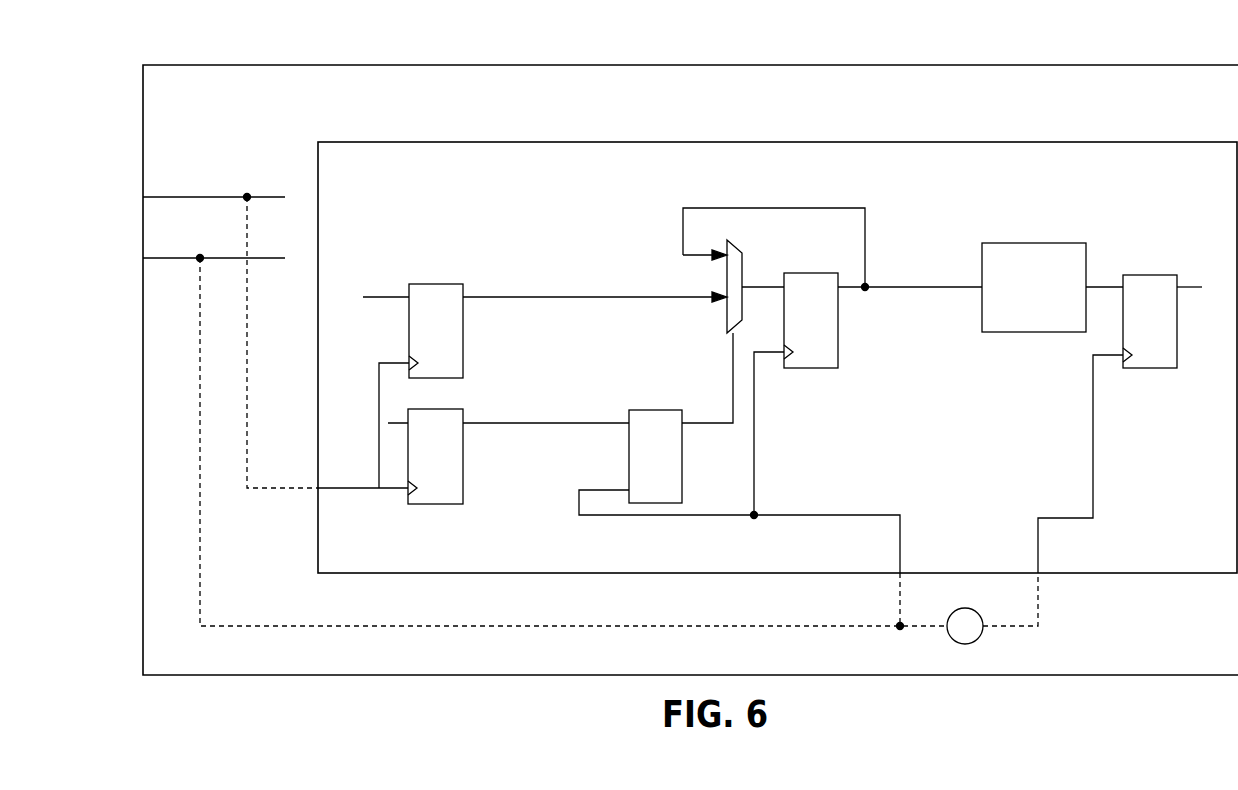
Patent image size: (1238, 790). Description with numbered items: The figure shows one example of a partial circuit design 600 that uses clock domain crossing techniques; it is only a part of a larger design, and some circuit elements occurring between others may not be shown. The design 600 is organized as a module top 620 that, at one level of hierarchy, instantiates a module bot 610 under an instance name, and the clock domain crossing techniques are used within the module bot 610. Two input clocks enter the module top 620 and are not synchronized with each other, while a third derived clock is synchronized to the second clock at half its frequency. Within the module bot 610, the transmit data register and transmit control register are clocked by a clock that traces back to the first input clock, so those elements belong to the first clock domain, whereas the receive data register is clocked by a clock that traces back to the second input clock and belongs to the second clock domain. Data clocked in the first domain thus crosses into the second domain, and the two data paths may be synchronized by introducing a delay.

The partial circuit design 600 is at (219, 60).
The module top 620 is at (328, 99).
The module bot 610 is at (498, 177).